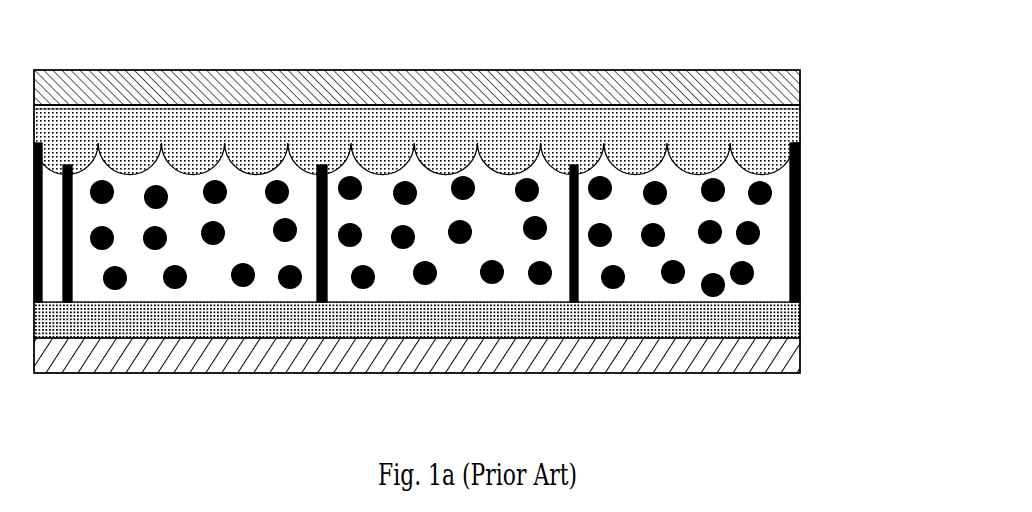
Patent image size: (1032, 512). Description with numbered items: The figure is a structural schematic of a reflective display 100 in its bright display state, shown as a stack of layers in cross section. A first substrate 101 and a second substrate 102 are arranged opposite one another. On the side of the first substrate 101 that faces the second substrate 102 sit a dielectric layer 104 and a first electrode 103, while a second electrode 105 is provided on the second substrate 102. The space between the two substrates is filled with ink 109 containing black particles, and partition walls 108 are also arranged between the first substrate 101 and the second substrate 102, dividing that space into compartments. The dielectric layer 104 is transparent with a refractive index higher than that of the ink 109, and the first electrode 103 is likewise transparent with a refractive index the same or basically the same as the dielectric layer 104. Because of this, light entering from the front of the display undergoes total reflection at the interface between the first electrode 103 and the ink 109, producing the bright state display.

The reflective display 100 is at (430, 384).
The first substrate 101 is at (800, 70).
The second substrate 102 is at (800, 373).
The first electrode 103 is at (770, 127).
The dielectric layer 104 is at (800, 107).
The second electrode 105 is at (800, 323).
The partition walls 108 is at (800, 250).
The ink 109 is at (770, 203).